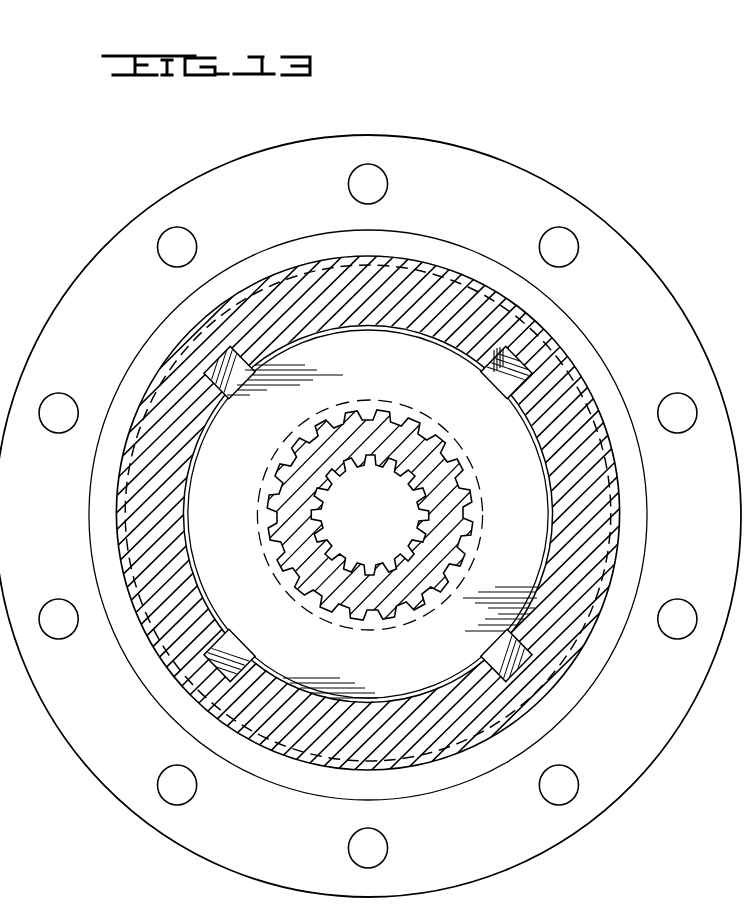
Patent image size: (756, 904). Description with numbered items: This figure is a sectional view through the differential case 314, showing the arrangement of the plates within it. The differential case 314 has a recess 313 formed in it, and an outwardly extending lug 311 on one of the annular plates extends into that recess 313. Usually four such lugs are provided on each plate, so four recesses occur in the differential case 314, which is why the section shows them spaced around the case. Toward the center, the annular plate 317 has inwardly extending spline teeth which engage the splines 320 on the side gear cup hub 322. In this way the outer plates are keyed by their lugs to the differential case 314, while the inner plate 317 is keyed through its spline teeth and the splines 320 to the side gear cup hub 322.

The outwardly extending lug 311 is at (513, 365).
The recess 313 is at (533, 380).
The differential case 314 is at (419, 262).
The annular plate 317 is at (522, 467).
The spline 320 is at (384, 410).
The side gear cup hub 322 is at (452, 529).